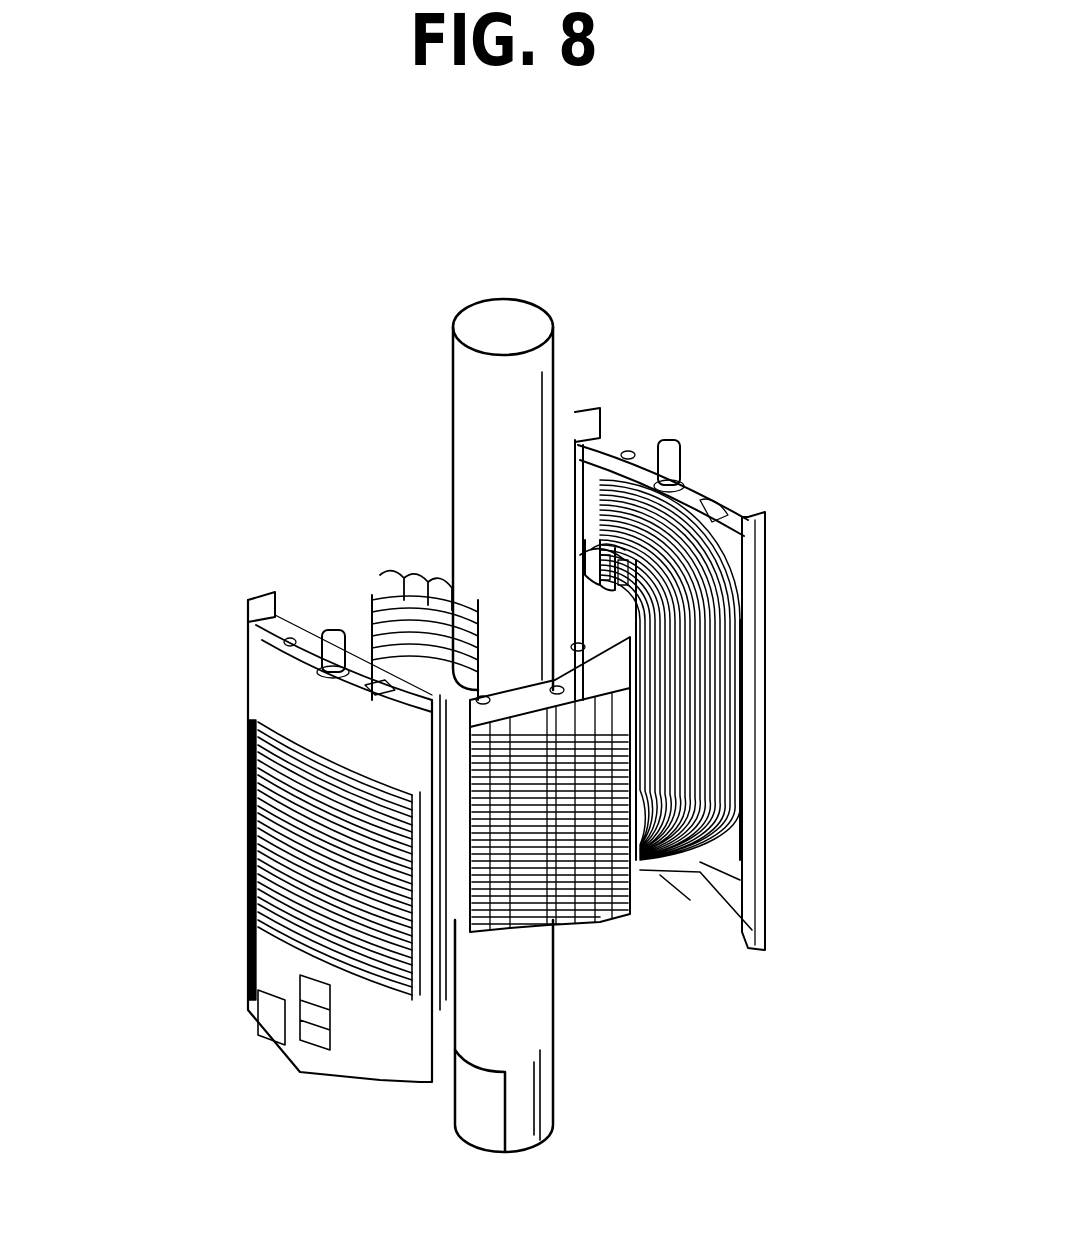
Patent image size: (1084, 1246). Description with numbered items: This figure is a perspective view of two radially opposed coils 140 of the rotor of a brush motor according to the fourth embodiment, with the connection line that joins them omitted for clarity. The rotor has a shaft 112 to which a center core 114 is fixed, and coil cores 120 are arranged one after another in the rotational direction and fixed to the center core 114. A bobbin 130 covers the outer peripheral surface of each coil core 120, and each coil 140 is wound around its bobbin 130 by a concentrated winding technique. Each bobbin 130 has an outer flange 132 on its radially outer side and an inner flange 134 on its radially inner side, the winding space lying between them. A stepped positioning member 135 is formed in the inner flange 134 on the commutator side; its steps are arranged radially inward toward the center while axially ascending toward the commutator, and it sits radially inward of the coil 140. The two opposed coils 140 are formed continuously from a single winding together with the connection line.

The shaft 112 is at (515, 318).
The center core 114 is at (600, 932).
The coil core 120 is at (250, 850).
The bobbin 130 is at (258, 690).
The outer flange 132 is at (262, 655).
The inner flange 134 is at (360, 625).
The stepped positioning member 135 is at (432, 570).
The coil 140 is at (710, 760).